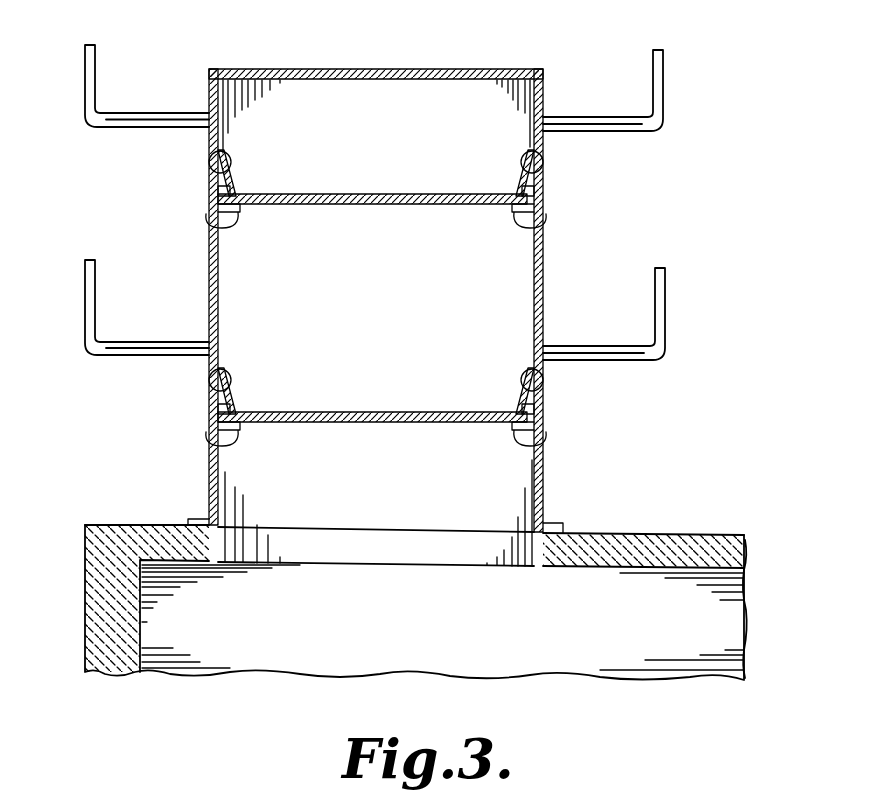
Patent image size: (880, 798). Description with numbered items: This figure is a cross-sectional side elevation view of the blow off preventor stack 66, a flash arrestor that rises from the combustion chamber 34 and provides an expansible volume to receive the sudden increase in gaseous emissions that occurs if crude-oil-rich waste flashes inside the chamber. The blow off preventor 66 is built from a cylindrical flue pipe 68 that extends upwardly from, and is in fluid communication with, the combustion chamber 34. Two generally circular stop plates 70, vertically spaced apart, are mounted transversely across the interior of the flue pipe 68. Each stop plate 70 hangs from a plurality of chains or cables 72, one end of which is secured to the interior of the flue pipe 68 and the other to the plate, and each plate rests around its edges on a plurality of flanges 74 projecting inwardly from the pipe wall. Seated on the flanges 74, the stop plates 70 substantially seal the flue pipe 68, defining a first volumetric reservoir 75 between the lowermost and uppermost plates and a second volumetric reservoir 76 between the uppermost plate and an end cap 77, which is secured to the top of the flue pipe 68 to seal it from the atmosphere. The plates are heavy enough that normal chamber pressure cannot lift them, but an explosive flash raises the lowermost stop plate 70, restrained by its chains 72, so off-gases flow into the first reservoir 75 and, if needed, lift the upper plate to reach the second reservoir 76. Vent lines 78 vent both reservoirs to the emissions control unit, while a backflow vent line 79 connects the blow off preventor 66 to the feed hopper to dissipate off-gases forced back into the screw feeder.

The combustion chamber 34 is at (697, 535).
The blow off preventor stack 66 is at (551, 472).
The flue pipe 68 is at (543, 312).
The stop plate 70 is at (356, 195).
The chain 72 is at (210, 151).
The flange 74 is at (212, 222).
The first volumetric reservoir 75 is at (478, 291).
The second volumetric reservoir 76 is at (340, 108).
The end cap 77 is at (470, 69).
The vent line 78 is at (665, 72).
The backflow vent line 79 is at (105, 128).